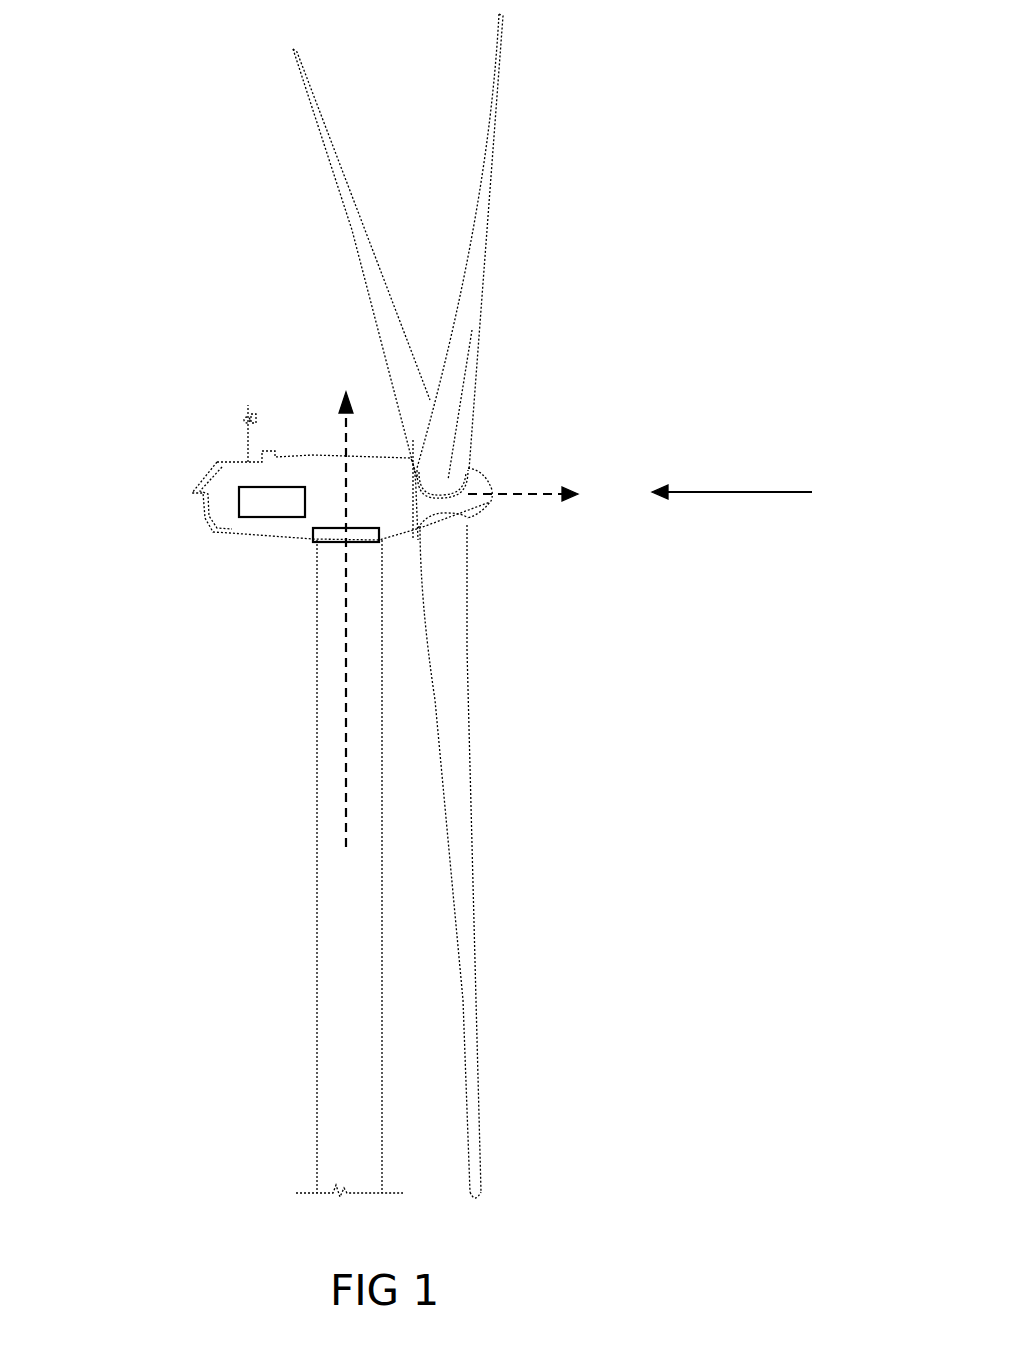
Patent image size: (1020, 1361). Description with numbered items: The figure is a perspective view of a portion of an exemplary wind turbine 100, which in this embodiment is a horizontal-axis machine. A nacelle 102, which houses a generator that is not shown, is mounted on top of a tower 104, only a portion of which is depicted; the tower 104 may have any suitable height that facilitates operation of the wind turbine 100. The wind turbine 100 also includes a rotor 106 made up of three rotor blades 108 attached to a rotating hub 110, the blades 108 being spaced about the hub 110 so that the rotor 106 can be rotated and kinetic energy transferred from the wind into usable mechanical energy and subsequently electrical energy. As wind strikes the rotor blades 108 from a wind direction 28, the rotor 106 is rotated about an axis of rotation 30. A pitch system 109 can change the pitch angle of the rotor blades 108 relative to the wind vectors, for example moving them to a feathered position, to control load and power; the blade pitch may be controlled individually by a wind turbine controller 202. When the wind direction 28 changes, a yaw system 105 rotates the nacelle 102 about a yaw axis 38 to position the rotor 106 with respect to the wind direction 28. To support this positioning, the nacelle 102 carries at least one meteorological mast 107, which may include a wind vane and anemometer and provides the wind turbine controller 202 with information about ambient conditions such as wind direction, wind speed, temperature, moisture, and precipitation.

The wind turbine 100 is at (176, 92).
The nacelle 102 is at (240, 545).
The tower 104 is at (317, 817).
The yaw system 105 is at (337, 533).
The rotor 106 is at (552, 231).
The meteorological mast 107 is at (249, 378).
The rotor blades 108 is at (332, 136).
The pitch system 109 is at (447, 522).
The hub 110 is at (488, 505).
The wind turbine controller 202 is at (250, 502).
The wind direction 28 is at (767, 492).
The axis of rotation 30 is at (527, 492).
The yaw axis 38 is at (343, 703).